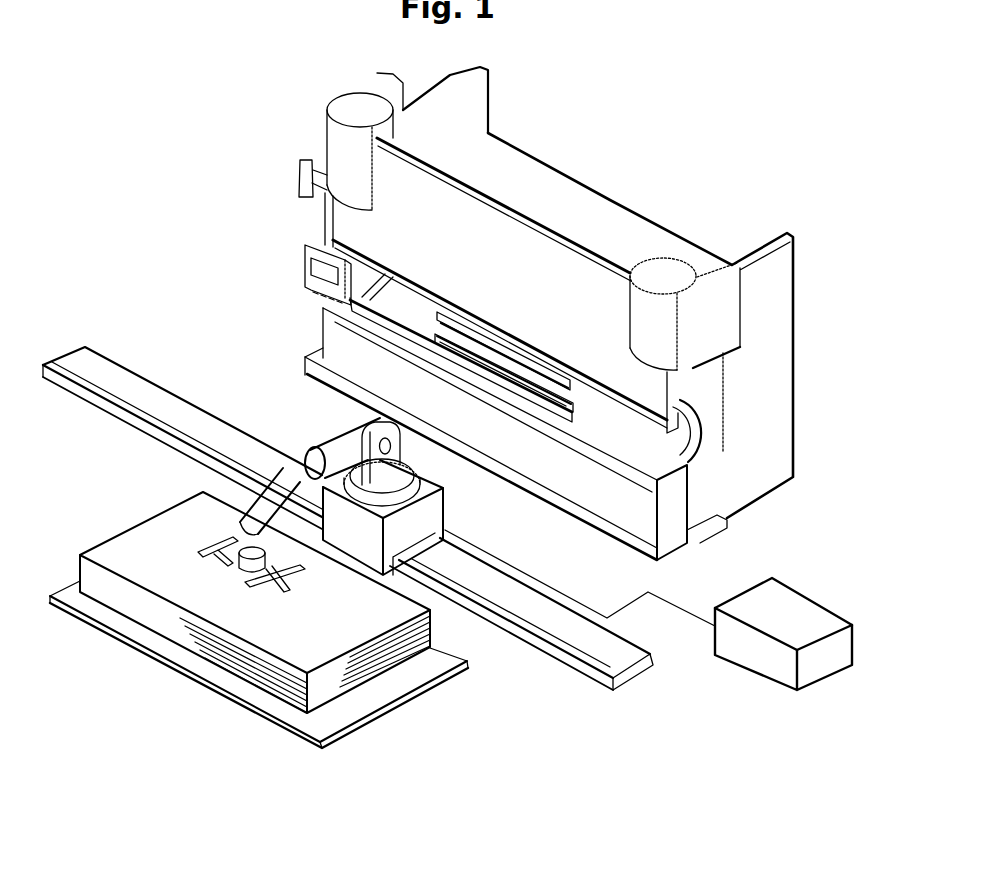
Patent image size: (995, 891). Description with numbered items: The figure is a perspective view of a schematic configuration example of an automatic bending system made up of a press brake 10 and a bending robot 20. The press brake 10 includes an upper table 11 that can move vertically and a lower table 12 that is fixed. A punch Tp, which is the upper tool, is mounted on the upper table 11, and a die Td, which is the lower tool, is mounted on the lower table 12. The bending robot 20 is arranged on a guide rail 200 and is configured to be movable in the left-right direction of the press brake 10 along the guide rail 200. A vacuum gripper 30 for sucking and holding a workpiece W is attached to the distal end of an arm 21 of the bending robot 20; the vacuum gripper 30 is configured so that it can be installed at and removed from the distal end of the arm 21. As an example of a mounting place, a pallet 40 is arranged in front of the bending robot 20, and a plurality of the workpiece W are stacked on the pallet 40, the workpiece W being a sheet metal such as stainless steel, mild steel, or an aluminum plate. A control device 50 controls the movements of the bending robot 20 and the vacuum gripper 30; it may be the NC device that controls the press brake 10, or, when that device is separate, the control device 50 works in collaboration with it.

The press brake 10 is at (546, 315).
The upper table 11 is at (590, 278).
The lower table 12 is at (640, 507).
The punch Tp is at (500, 338).
The die Td is at (487, 375).
The bending robot 20 is at (334, 498).
The arm 21 is at (279, 488).
The vacuum gripper 30 is at (210, 550).
The workpiece W is at (146, 550).
The pallet 40 is at (153, 648).
The guide rail 200 is at (600, 657).
The control device 50 is at (771, 683).